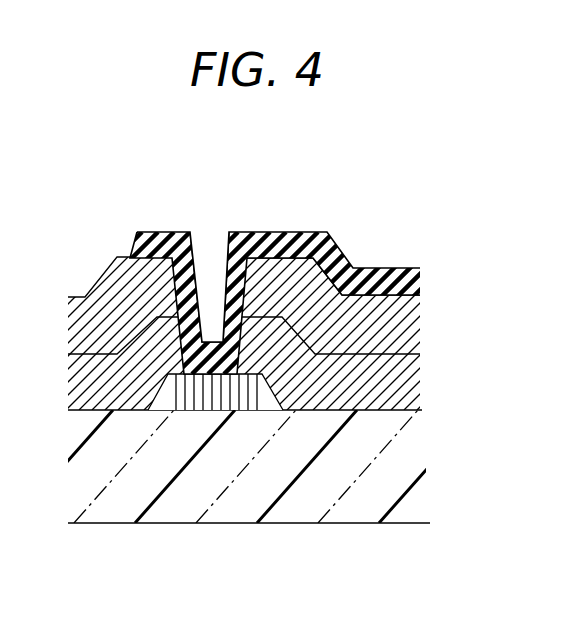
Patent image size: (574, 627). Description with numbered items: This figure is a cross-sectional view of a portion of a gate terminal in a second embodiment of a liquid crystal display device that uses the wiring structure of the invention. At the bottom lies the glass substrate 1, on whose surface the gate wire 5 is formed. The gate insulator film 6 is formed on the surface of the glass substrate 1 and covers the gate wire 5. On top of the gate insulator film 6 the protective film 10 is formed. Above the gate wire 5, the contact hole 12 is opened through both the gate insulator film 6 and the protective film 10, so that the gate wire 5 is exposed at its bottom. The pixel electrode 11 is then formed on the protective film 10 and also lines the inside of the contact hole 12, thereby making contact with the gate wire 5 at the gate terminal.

The glass substrate 1 is at (135, 488).
The gate wire 5 is at (218, 380).
The gate insulator film 6 is at (330, 387).
The protective film 10 is at (366, 325).
The pixel electrode 11 is at (277, 250).
The contact hole 12 is at (212, 280).